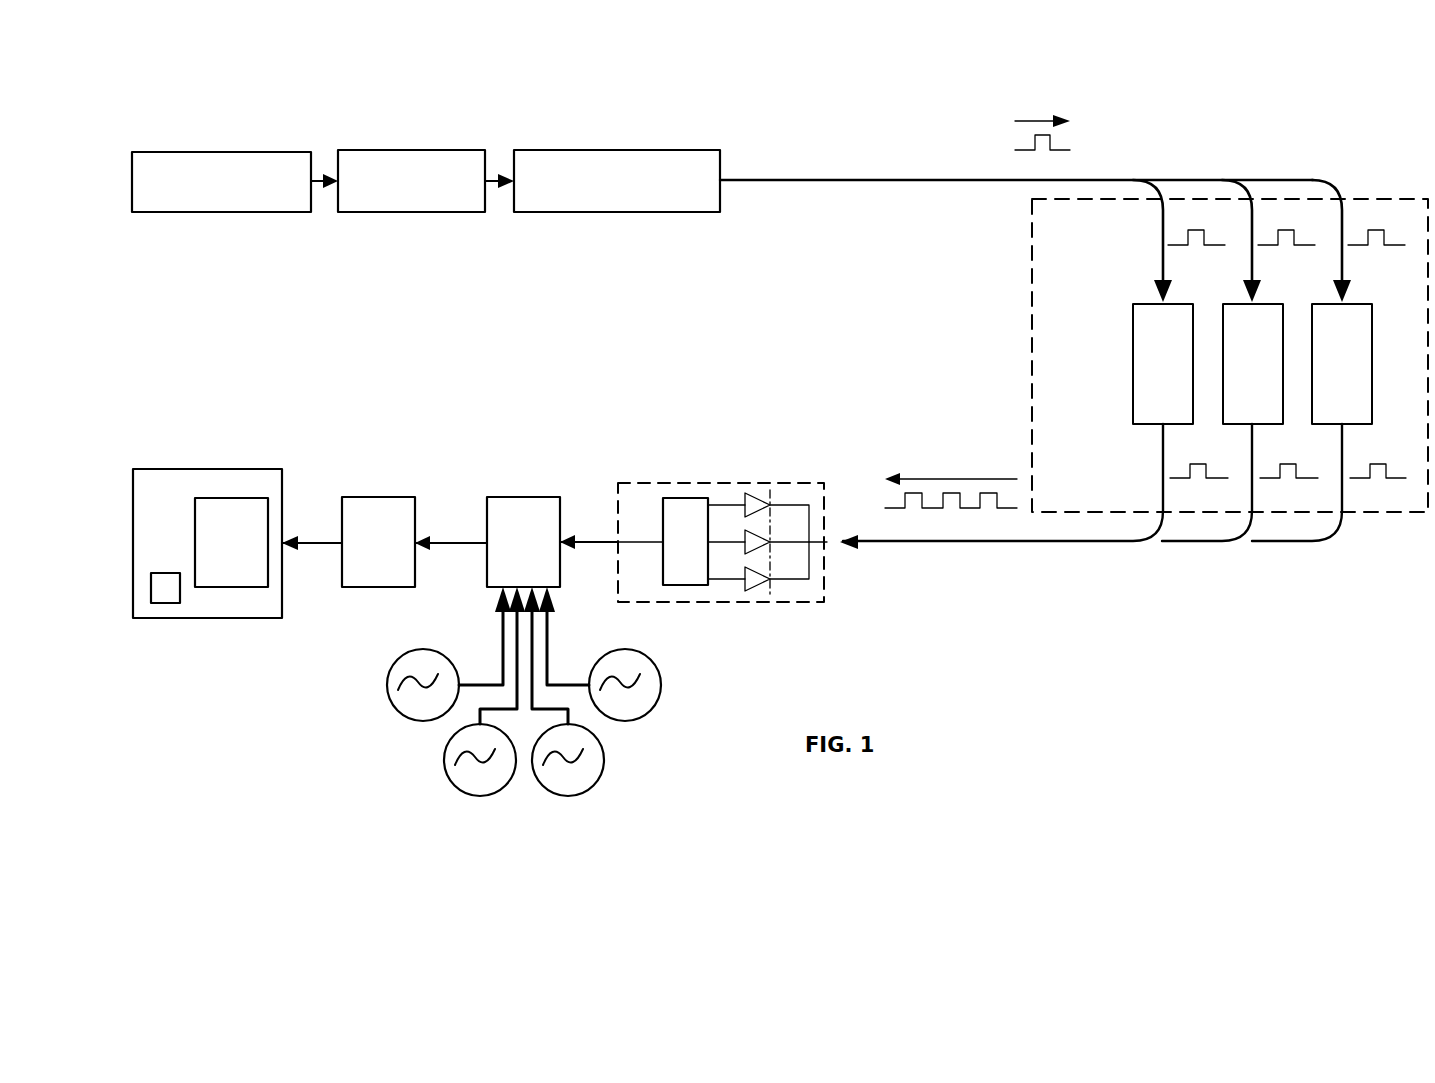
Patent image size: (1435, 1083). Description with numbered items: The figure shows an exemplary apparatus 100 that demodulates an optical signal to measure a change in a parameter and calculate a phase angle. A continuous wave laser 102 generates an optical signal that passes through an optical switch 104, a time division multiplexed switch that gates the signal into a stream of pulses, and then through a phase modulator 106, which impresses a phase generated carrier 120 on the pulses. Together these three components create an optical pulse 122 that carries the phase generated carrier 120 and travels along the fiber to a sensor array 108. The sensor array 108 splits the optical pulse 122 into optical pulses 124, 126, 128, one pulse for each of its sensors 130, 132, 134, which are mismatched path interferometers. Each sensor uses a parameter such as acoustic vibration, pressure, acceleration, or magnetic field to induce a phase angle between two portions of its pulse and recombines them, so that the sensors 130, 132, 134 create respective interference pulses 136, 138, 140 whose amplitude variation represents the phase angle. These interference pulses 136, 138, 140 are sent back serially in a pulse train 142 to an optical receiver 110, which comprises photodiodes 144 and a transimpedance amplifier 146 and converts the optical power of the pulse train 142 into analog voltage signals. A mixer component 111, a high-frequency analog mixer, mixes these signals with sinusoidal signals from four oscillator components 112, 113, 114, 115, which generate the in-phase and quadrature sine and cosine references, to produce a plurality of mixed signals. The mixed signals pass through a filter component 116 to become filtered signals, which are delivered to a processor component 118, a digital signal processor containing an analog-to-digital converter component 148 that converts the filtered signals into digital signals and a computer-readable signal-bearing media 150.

The apparatus 100 is at (334, 775).
The laser 102 is at (223, 212).
The optical switch 104 is at (399, 212).
The phase modulator 106 is at (558, 212).
The sensor array 108 is at (1155, 355).
The optical receiver 110 is at (650, 483).
The mixer component 111 is at (518, 497).
The oscillator component 112 is at (410, 720).
The oscillator component 113 is at (448, 778).
The oscillator component 114 is at (600, 778).
The oscillator component 115 is at (640, 720).
The filter component 116 is at (387, 497).
The processor component 118 is at (222, 469).
The phase generated carrier 120 is at (866, 518).
The optical pulse 122 is at (1010, 142).
The optical pulse 124 is at (1190, 210).
The optical pulse 126 is at (1280, 210).
The optical pulse 128 is at (1368, 210).
The sensor 130 is at (1133, 320).
The sensor 132 is at (1223, 365).
The sensor 134 is at (1312, 408).
The interference pulse 136 is at (1190, 498).
The interference pulse 138 is at (1278, 498).
The interference pulse 140 is at (1368, 498).
The pulse train 142 is at (945, 450).
The photodiode 144 is at (784, 590).
The transimpedance amplifier 146 is at (678, 585).
The analog-to-digital converter component 148 is at (165, 603).
The computer-readable signal-bearing media 150 is at (236, 587).